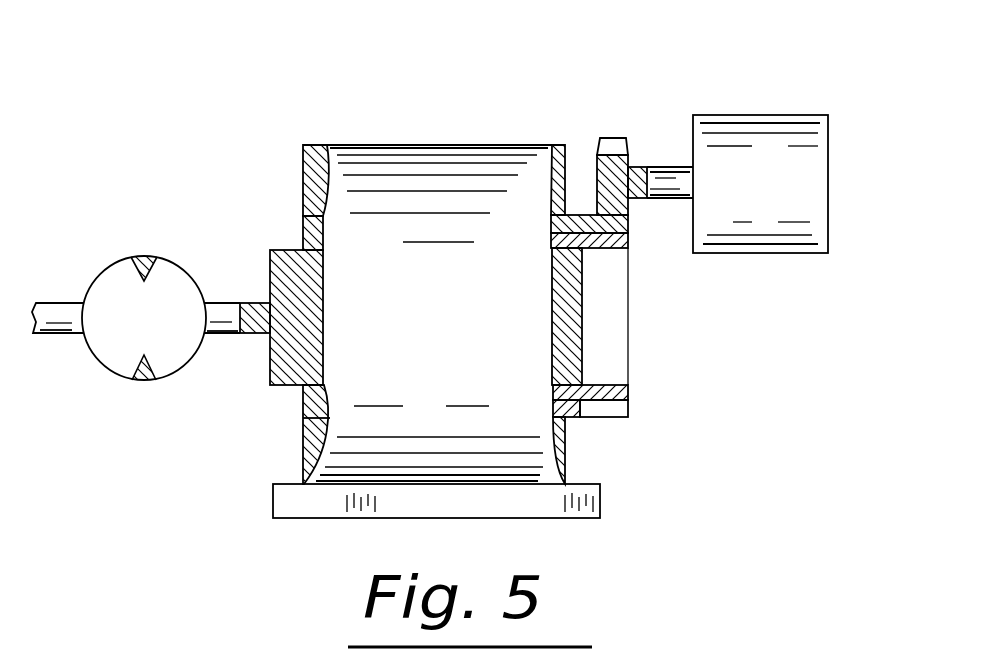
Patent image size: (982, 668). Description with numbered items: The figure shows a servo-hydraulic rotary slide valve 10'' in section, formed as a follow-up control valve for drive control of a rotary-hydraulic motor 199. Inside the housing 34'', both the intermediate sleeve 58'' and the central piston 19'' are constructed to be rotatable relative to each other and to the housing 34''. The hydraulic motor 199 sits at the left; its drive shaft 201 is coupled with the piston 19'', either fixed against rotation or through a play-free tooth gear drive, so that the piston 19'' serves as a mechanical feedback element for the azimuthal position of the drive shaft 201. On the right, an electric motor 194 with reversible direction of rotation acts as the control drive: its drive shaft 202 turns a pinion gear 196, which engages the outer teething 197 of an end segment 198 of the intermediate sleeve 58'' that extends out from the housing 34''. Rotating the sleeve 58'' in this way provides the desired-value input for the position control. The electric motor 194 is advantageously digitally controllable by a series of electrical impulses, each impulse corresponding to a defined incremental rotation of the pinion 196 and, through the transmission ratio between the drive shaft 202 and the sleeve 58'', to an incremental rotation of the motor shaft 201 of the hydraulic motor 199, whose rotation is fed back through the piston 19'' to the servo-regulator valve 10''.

The rotary slide valve 10'' is at (450, 274).
The housing 34'' is at (351, 137).
The intermediate sleeve 58'' is at (264, 203).
The piston 19'' is at (265, 344).
The rotary-hydraulic motor 199 is at (118, 272).
The drive shaft 201 is at (68, 330).
The pinion gear 196 is at (605, 142).
The end segment 198 is at (573, 418).
The outer teething 197 is at (608, 413).
The drive shaft 202 is at (658, 200).
The electric motor 194 is at (763, 120).